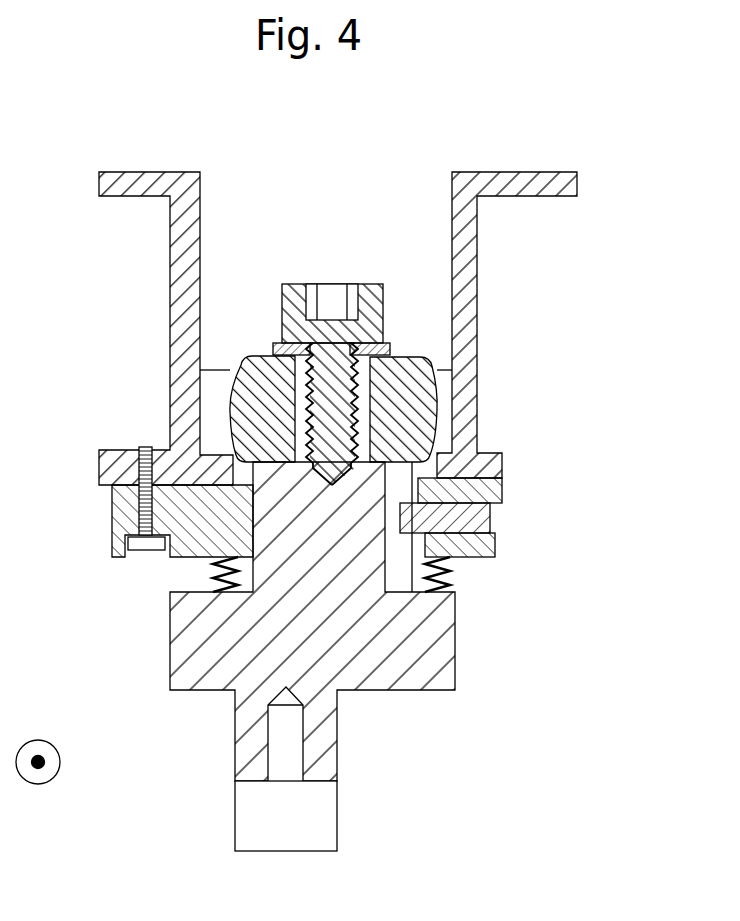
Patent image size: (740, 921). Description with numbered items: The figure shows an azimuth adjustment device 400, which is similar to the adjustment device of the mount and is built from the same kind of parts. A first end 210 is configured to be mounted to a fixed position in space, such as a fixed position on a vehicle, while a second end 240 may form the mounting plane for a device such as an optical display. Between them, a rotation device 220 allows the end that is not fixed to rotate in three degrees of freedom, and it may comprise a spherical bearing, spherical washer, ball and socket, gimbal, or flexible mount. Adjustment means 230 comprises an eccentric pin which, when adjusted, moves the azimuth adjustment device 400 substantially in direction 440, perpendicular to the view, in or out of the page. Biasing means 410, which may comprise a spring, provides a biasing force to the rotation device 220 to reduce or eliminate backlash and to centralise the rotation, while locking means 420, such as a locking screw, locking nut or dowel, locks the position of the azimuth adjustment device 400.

The azimuth adjustment device 400 is at (548, 128).
The first end 210 is at (540, 190).
The rotation device 220 is at (407, 402).
The adjustment means 230 is at (296, 300).
The second end 240 is at (257, 815).
The biasing means 410 is at (213, 570).
The locking means 420 is at (130, 503).
The direction 440 is at (40, 739).